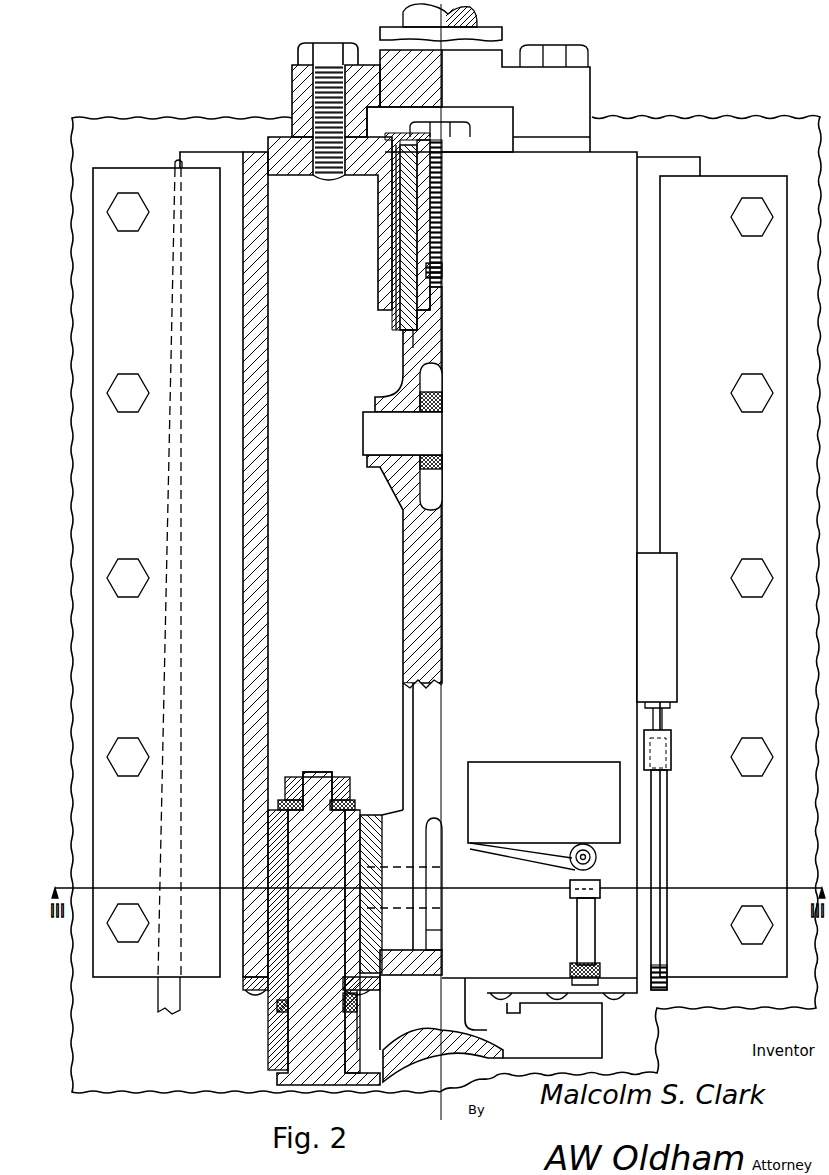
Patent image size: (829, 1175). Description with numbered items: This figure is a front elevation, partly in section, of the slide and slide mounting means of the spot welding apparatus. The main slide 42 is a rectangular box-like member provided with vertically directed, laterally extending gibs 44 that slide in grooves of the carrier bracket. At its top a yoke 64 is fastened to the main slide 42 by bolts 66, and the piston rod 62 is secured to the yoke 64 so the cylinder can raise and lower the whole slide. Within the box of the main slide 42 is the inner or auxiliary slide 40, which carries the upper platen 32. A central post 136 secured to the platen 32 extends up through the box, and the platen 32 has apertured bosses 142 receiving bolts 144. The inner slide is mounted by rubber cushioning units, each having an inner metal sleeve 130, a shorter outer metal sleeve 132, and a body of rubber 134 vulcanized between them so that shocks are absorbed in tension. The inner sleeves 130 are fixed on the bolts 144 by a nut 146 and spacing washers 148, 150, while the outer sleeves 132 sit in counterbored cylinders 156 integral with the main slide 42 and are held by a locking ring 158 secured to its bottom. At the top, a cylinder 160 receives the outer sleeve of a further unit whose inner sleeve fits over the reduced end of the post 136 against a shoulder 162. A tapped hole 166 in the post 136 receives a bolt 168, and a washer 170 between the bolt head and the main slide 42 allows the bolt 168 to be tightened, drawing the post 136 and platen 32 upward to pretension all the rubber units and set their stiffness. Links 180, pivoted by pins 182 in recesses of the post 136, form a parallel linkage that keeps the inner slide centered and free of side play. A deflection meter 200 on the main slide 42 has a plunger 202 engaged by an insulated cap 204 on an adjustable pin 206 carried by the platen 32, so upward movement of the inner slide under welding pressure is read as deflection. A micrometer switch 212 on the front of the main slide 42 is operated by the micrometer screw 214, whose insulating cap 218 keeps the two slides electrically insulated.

The platen 32 is at (398, 1068).
The inner or auxiliary slide 40 is at (400, 634).
The main slide 42 is at (262, 415).
The gibs 44 is at (197, 152).
The piston rod 62 is at (478, 23).
The yoke 64 is at (292, 80).
The bolts 66 is at (318, 178).
The inner metal sleeve 130 is at (419, 306).
The outer metal sleeve 132 is at (400, 316).
The body of rubber 134 is at (410, 333).
The post 136 is at (410, 547).
The apertured bosses 142 is at (283, 1028).
The bolts 144 is at (300, 1043).
The nut 146 is at (330, 778).
The spacing washer 148 is at (285, 800).
The spacing washer 150 is at (280, 1005).
The cylinder 156 is at (382, 935).
The locking ring 158 is at (243, 984).
The cylinder 160 is at (380, 212).
The shoulder 162 is at (400, 348).
The tapped hole 166 is at (444, 276).
The bolt 168 is at (445, 226).
The washer 170 is at (402, 132).
The links 180 is at (445, 393).
The pins 182 is at (372, 437).
The deflection meter 200 is at (668, 568).
The plunger 202 is at (662, 724).
The insulated cap 204 is at (672, 750).
The pin 206 is at (660, 812).
The micrometer switch 212 is at (545, 776).
The micrometer screw 214 is at (576, 930).
The insulating cap 218 is at (568, 882).